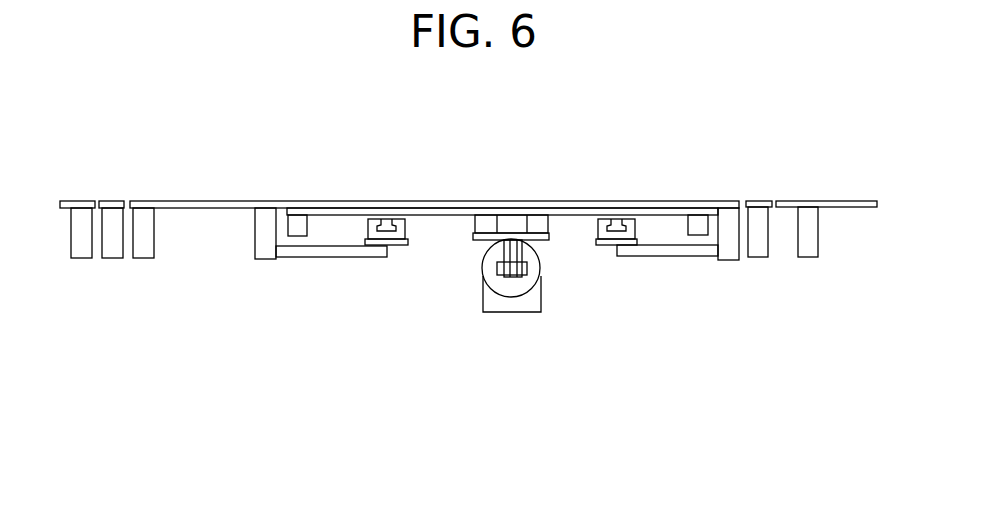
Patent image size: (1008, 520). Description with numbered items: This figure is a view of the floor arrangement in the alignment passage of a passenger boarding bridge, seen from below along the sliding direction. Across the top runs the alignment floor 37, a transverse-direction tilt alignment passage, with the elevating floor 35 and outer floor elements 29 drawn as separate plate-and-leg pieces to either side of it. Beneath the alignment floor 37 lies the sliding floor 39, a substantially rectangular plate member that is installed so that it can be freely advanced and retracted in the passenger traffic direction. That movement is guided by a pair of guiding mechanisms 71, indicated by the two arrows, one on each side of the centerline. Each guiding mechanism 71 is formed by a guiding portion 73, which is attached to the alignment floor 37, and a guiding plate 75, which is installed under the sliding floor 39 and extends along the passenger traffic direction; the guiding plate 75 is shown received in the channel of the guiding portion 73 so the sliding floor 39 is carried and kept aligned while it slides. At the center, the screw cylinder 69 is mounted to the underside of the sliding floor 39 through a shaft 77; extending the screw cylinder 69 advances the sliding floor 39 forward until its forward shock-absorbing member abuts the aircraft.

The support leg 29 is at (82, 200).
The elevating floor 35 is at (116, 200).
The alignment floor 37 is at (320, 201).
The sliding floor 39 is at (458, 215).
The screw cylinder 69 is at (540, 267).
The guiding mechanism 71 is at (387, 263).
The guiding portion 73 is at (407, 242).
The guiding plate 75 is at (386, 219).
The shaft 77 is at (522, 256).